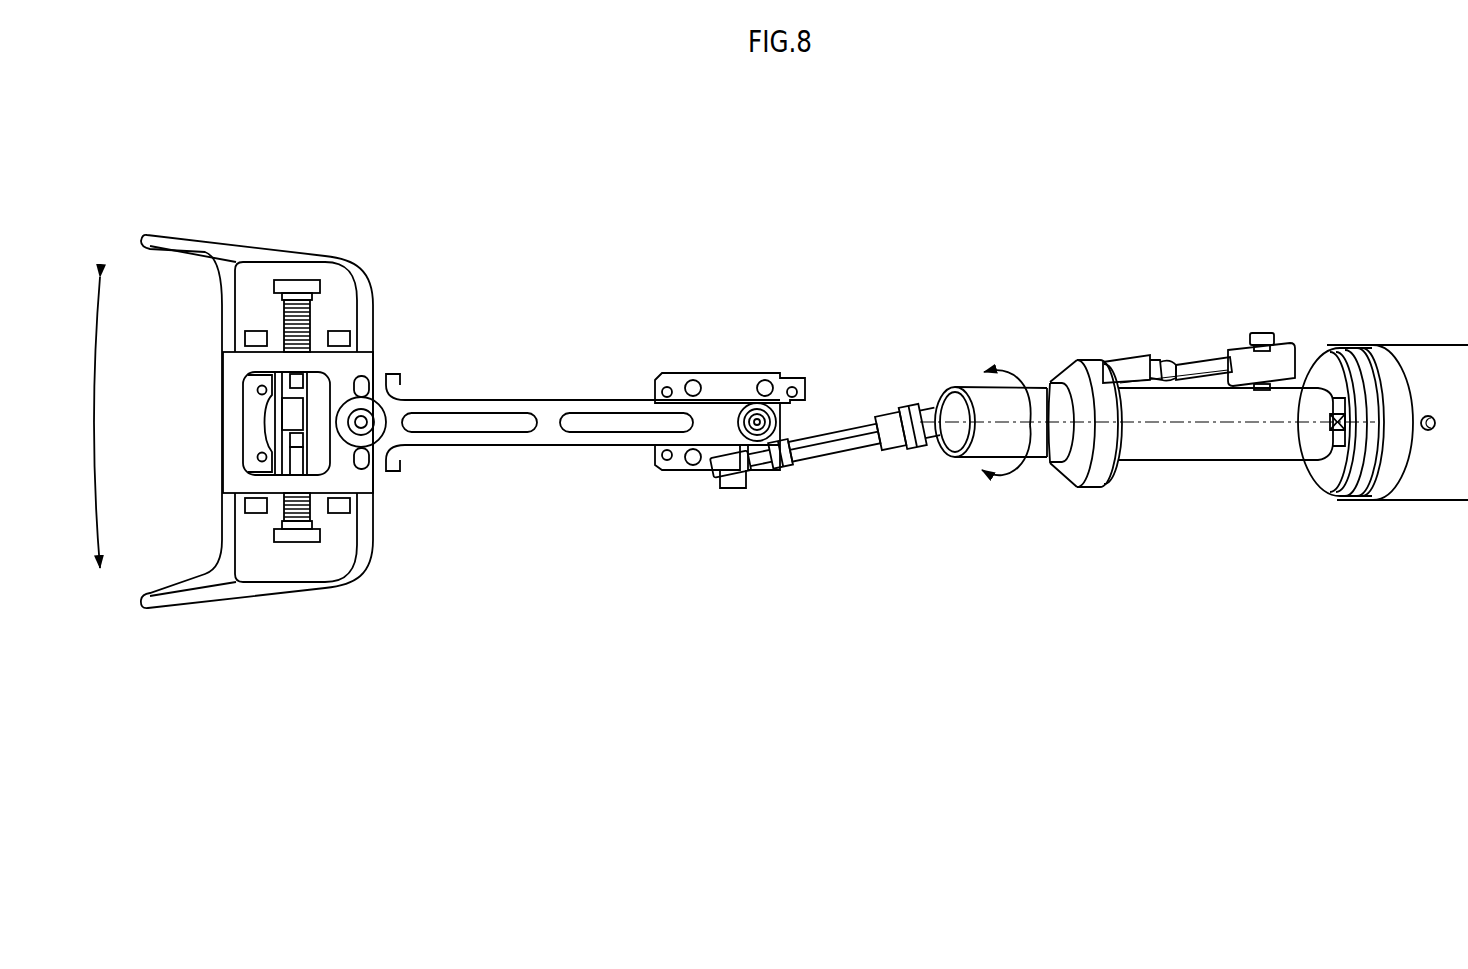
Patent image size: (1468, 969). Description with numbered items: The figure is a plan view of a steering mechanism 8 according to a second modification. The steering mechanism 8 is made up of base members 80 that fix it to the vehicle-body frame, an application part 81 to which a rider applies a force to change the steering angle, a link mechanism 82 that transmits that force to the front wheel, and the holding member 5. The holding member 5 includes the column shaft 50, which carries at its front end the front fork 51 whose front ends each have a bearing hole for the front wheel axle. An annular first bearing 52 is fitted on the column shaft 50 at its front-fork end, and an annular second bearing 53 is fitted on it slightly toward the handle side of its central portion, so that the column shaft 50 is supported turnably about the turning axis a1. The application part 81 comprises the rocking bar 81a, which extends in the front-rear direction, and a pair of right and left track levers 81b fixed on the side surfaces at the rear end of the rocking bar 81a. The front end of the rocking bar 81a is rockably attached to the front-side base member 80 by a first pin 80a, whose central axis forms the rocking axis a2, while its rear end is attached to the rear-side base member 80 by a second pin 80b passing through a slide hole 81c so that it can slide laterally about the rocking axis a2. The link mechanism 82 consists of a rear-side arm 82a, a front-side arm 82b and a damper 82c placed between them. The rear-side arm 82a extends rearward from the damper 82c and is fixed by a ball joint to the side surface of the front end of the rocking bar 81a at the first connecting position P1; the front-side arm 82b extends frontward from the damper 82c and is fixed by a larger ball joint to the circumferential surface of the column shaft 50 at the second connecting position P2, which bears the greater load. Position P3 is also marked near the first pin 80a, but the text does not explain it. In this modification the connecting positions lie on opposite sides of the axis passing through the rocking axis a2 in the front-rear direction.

The steering mechanism 8 is at (1047, 207).
The holding member 5 is at (1405, 272).
The column shaft 50 is at (1200, 450).
The front fork 51 is at (1410, 495).
The first bearing 52 is at (1298, 470).
The second bearing 53 is at (1081, 470).
The base member 80 is at (256, 388).
The first pin 80a is at (770, 410).
The second pin 80b is at (376, 392).
The application part 81 is at (547, 490).
The rocking bar 81a is at (550, 405).
The track lever 81b is at (302, 254).
The slide hole 81c is at (364, 465).
The link mechanism 82 is at (1184, 282).
The rear-side arm 82a is at (813, 465).
The front-side arm 82b is at (1220, 348).
The damper 82c is at (1128, 348).
The first connecting position P1 is at (730, 508).
The second connecting position P2 is at (1264, 320).
The third position P3 is at (806, 420).
The turning axis a1 is at (931, 420).
The rocking axis a2 is at (757, 412).